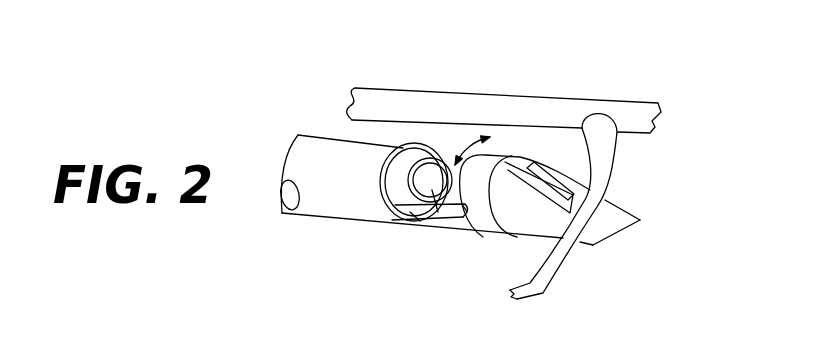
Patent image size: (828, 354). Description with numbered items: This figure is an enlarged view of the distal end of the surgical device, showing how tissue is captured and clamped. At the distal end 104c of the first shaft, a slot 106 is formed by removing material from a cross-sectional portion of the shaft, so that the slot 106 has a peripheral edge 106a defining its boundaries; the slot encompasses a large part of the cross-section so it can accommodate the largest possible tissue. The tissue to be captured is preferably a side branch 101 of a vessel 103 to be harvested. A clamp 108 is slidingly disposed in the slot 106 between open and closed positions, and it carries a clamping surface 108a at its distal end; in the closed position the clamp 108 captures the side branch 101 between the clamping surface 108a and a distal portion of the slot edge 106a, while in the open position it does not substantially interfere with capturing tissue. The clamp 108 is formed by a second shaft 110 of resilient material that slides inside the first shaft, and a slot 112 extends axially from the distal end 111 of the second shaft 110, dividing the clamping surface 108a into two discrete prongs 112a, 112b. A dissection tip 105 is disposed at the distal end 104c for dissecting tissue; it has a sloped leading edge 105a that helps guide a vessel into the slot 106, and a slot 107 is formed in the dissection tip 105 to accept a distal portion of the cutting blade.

The side branch 101 is at (537, 275).
The vessel 103 is at (568, 103).
The distal end of the first shaft 104c is at (342, 152).
The dissection tip 105 is at (628, 199).
The sloped leading edge 105a is at (613, 218).
The slot 106 is at (452, 150).
The peripheral edge 106a is at (427, 160).
The slot 107 is at (555, 187).
The clamp 108 is at (431, 214).
The clamping surface 108a is at (407, 213).
The second shaft 110 is at (407, 168).
The distal end of the second shaft 111 is at (393, 197).
The slot 112 is at (433, 193).
The prong 112a is at (418, 221).
The prong 112b is at (466, 200).